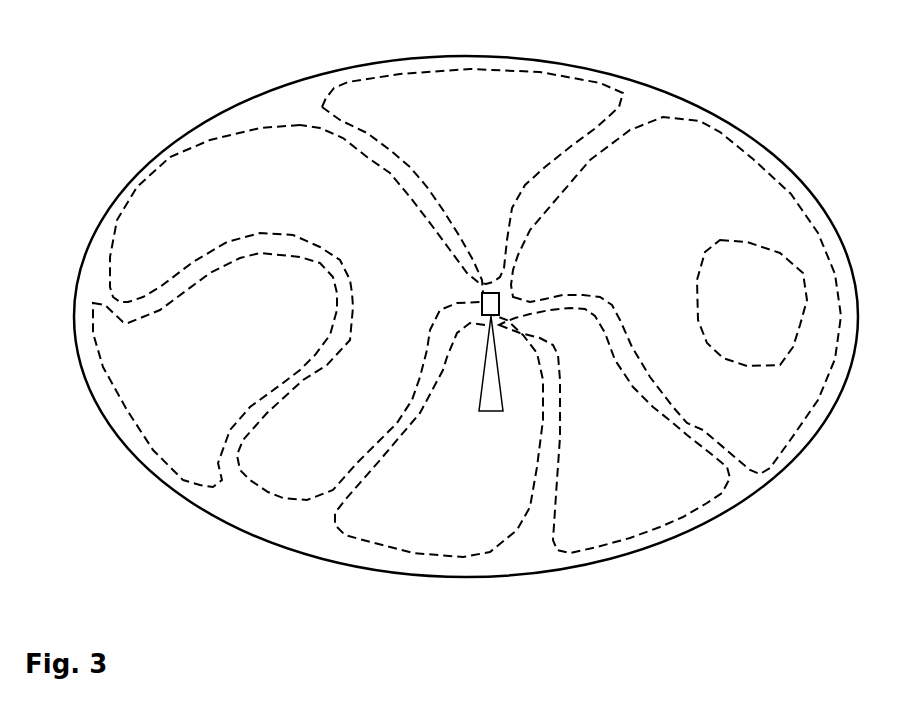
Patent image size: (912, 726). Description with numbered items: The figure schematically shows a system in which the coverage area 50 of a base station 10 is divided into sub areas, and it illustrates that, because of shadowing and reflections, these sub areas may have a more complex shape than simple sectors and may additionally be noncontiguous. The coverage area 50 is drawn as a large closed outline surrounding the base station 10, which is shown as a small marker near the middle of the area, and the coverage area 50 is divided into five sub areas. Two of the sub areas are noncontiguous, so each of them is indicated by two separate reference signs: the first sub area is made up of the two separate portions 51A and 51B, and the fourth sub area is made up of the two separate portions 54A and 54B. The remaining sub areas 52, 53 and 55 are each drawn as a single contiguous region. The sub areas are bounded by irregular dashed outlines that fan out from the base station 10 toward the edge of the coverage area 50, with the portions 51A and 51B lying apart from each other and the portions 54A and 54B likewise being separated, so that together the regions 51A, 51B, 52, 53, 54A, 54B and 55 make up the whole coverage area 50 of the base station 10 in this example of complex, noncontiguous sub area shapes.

The base station 10 is at (491, 411).
The coverage area 50 is at (670, 95).
The sub area 51A is at (340, 106).
The sub area 51B is at (143, 408).
The sub area 52 is at (157, 215).
The sub area 53 is at (385, 528).
The sub area 54A is at (665, 517).
The sub area 54B is at (753, 353).
The sub area 55 is at (715, 168).